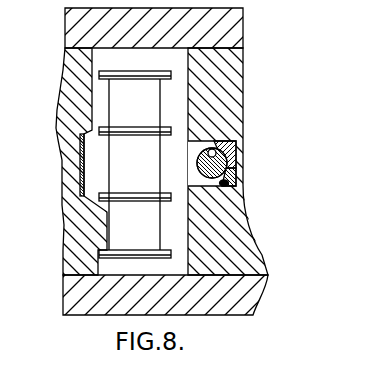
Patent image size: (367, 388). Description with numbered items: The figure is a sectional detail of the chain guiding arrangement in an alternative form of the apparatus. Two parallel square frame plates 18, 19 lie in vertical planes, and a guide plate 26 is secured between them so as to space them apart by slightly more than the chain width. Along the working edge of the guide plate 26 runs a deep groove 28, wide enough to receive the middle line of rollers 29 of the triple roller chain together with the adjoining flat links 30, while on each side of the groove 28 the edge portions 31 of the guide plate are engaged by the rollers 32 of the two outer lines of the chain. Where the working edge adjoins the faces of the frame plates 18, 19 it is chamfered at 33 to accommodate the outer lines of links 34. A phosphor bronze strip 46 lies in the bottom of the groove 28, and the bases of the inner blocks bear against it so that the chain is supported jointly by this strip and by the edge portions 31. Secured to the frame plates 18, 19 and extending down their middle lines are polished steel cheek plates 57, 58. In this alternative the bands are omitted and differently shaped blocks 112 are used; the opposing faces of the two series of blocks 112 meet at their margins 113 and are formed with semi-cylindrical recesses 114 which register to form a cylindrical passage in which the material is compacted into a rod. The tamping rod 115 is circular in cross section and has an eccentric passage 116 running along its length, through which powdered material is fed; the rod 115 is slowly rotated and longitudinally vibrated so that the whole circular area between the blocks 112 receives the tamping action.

The frame plate 18 is at (75, 30).
The frame plate 19 is at (78, 300).
The cheek plate 57 is at (231, 68).
The cheek plate 58 is at (242, 257).
The chamfer 33 is at (67, 62).
The rollers 32 is at (113, 98).
The edge portions 31 is at (60, 108).
The flat links 30 is at (57, 128).
The phosphor bronze strip 46 is at (67, 153).
The rollers 29 is at (115, 173).
The guide plate 26 is at (63, 198).
The groove 28 is at (72, 215).
The links 34 is at (72, 255).
The blocks 112 is at (238, 130).
The passage 116 is at (233, 148).
The semi-cylindrical recesses 114 is at (232, 158).
The tamping rod 115 is at (232, 168).
The margins 113 is at (233, 182).